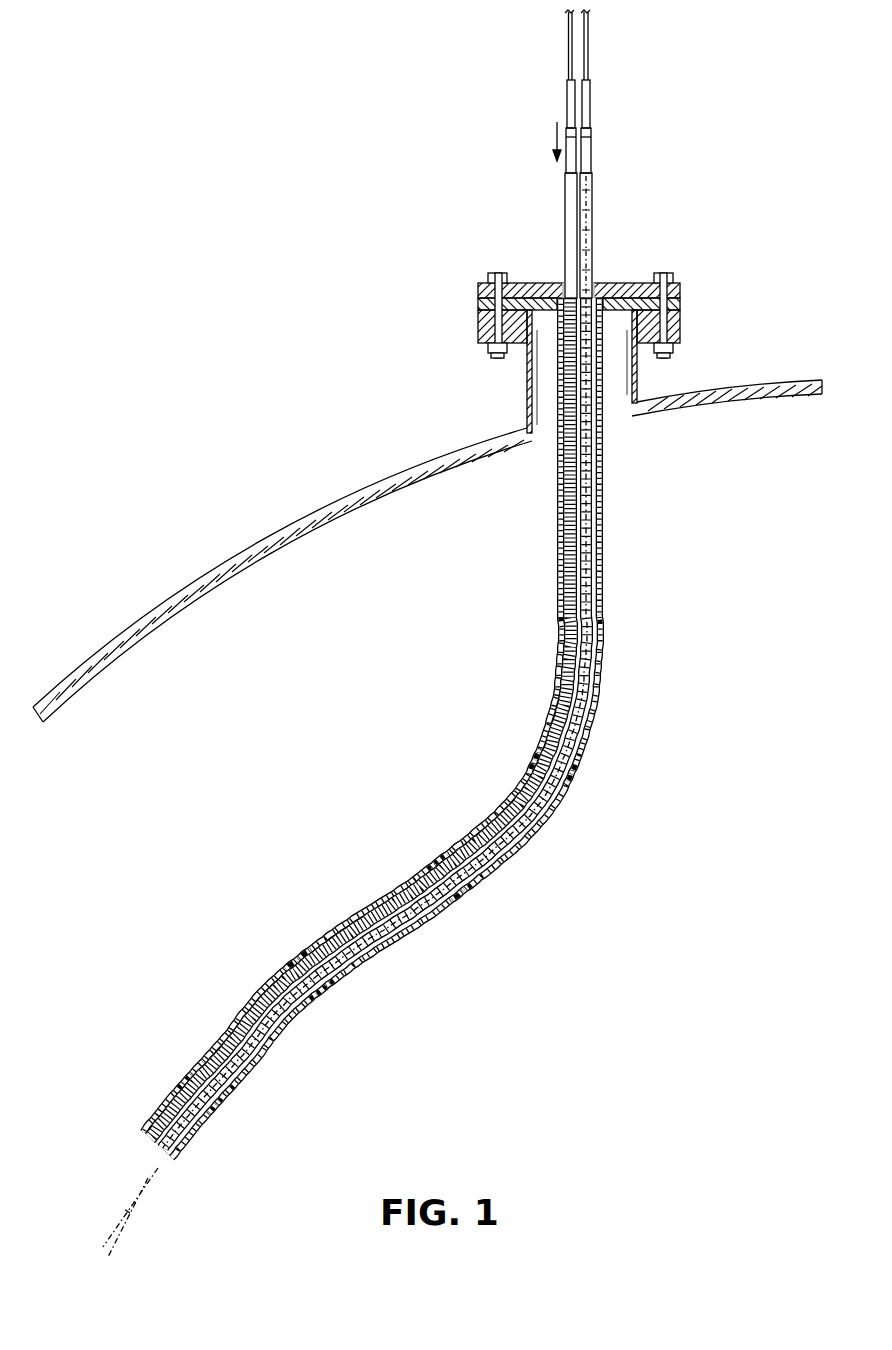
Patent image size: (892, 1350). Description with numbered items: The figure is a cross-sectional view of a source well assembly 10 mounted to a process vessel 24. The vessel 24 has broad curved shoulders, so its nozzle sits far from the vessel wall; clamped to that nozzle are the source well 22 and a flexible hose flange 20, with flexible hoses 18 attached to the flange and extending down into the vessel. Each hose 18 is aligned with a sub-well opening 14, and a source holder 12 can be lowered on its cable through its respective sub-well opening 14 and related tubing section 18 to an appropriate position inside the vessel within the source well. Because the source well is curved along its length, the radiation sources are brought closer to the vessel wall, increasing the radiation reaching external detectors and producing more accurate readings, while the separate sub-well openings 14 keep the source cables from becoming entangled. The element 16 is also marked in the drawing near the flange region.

The source well assembly 10 is at (427, 633).
The source holder 12 is at (567, 134).
The sub-well opening 14 is at (565, 215).
The upper flange plate 16 is at (605, 298).
The flexible hose 18 is at (556, 563).
The flexible hose flange 20 is at (680, 303).
The source well 22 is at (490, 322).
The vessel 24 is at (410, 468).